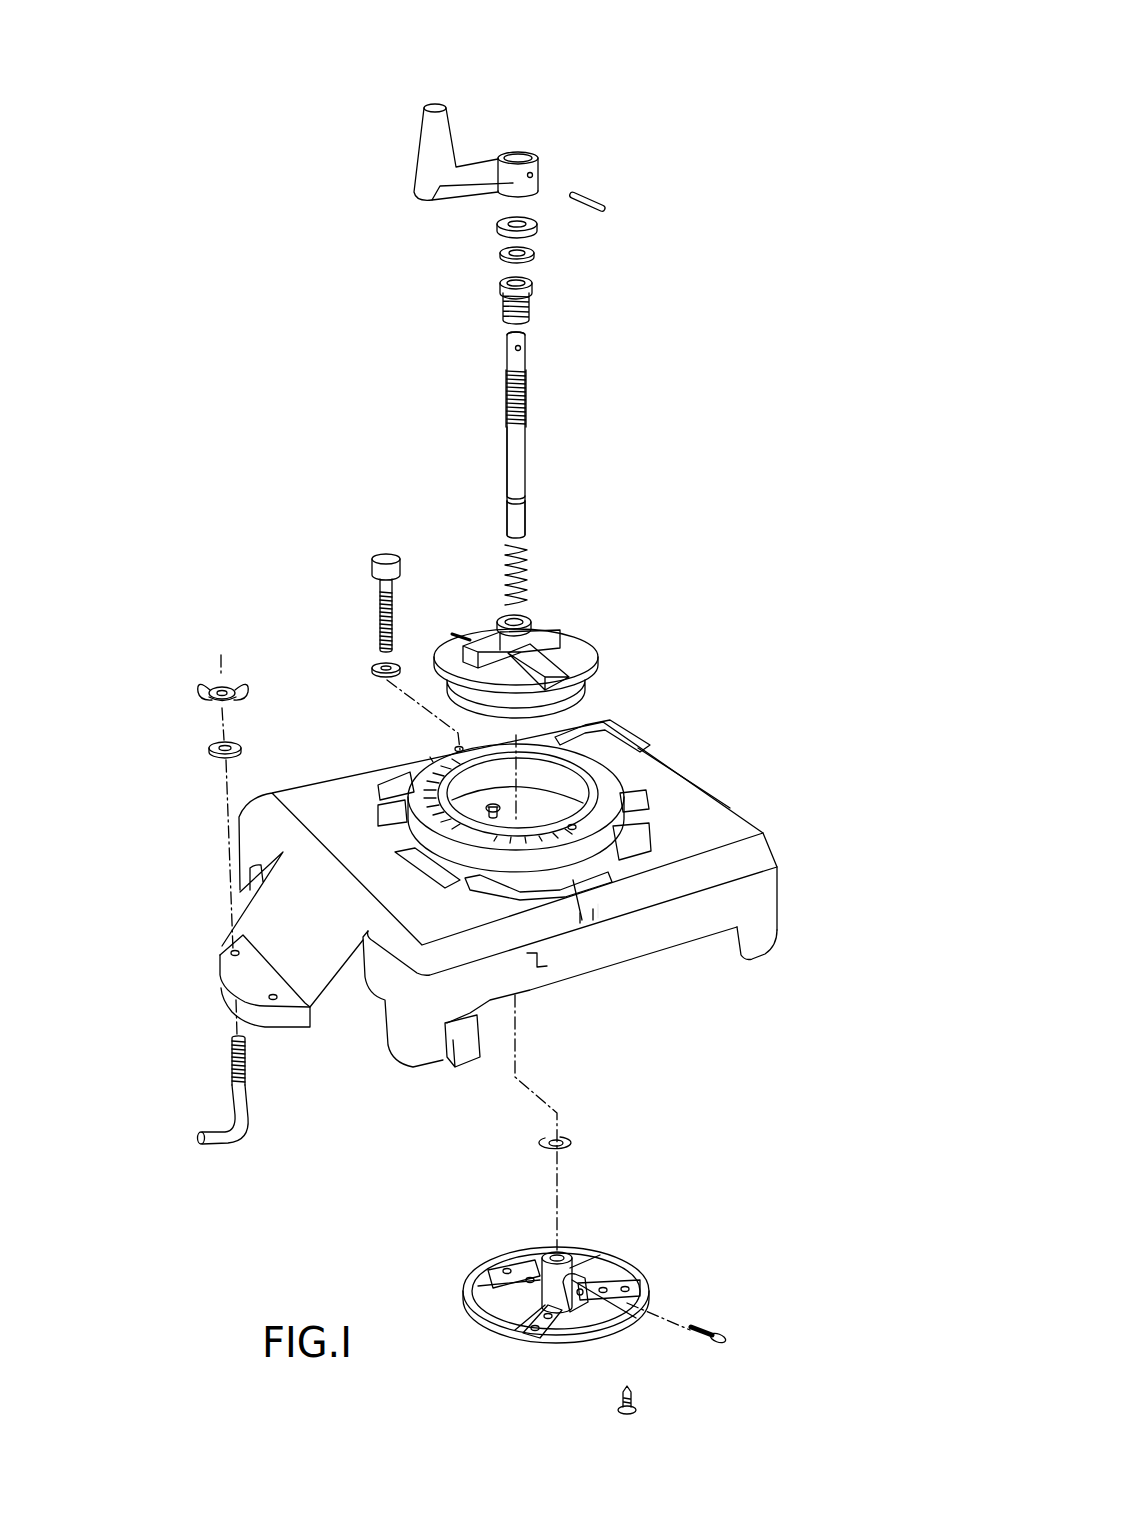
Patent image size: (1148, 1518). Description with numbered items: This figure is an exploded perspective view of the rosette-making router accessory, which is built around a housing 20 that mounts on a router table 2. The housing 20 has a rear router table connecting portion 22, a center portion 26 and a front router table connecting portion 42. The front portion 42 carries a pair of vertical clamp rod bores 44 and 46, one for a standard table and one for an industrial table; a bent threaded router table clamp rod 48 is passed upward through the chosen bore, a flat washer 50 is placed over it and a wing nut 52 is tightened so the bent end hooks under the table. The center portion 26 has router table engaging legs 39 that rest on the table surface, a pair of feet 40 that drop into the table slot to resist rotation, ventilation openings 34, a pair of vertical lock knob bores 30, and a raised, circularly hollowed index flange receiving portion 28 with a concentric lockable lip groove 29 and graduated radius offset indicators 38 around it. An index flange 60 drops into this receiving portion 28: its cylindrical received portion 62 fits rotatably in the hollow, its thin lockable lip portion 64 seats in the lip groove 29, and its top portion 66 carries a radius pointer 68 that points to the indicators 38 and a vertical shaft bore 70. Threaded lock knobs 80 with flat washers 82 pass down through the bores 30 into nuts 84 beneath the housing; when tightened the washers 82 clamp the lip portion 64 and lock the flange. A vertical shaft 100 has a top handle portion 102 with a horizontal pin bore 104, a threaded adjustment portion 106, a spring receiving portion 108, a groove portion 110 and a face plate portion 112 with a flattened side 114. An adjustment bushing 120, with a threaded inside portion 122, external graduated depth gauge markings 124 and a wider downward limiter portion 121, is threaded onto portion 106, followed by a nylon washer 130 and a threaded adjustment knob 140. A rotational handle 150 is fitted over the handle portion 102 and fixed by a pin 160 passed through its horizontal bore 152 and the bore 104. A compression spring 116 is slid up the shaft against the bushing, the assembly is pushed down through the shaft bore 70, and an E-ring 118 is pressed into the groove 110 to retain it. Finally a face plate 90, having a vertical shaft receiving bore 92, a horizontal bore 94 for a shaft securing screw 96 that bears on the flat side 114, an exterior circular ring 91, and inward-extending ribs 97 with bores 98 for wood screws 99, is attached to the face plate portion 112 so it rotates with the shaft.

The router table 2 is at (537, 130).
The housing 20 is at (531, 911).
The rear router table connecting portion 22 is at (692, 778).
The center portion 26 is at (519, 905).
The index flange receiving portion 28 is at (514, 803).
The lockable lip groove 29 is at (574, 742).
The lock knob bores 30 is at (457, 748).
The ventilation openings 34 is at (582, 920).
The graduated radius offset indicators 38 is at (433, 760).
The router table engaging legs 39 is at (768, 935).
The feet 40 is at (473, 1064).
The front router table connecting portion 42 is at (265, 986).
The clamp rod bore 44 is at (232, 951).
The clamp rod bore 46 is at (273, 1001).
The router table clamp rod 48 is at (212, 1130).
The flat washer 50 is at (209, 746).
The wing nut 52 is at (196, 687).
The index flange 60 is at (553, 646).
The received portion 62 is at (588, 694).
The lockable lip portion 64 is at (600, 666).
The top portion 66 is at (561, 632).
The radius pointer 68 is at (458, 632).
The vertical shaft bore 70 is at (526, 613).
The threaded lock knobs 80 is at (376, 577).
The flat washer 82 is at (377, 662).
The nuts 84 is at (483, 812).
The face plate 90 is at (553, 1292).
The exterior circular ring 91 is at (473, 1274).
The vertical shaft receiving bore 92 is at (571, 1252).
The horizontal bore 94 is at (608, 1273).
The shaft securing screw 96 is at (725, 1336).
The inward-extending ribs 97 is at (545, 1327).
The bores 98 is at (530, 1277).
The wood screws 99 is at (638, 1400).
The vertical shaft 100 is at (520, 433).
The top handle portion 102 is at (507, 345).
The horizontal pin bore 104 is at (521, 349).
The threaded adjustment portion 106 is at (508, 381).
The spring receiving portion 108 is at (508, 430).
The groove portion 110 is at (523, 497).
The face plate portion 112 is at (508, 503).
The flattened side 114 is at (523, 515).
The compression spring 116 is at (527, 554).
The E-ring 118 is at (558, 1136).
The adjustment bushing 120 is at (518, 290).
The downward limiter portion 121 is at (534, 290).
The threaded inside portion 122 is at (524, 281).
The graduated depth gauge markings 124 is at (503, 301).
The washer 130 is at (500, 253).
The threaded adjustment knob 140 is at (497, 224).
The rotational handle 150 is at (424, 128).
The horizontal bore 152 is at (533, 175).
The pin 160 is at (610, 204).